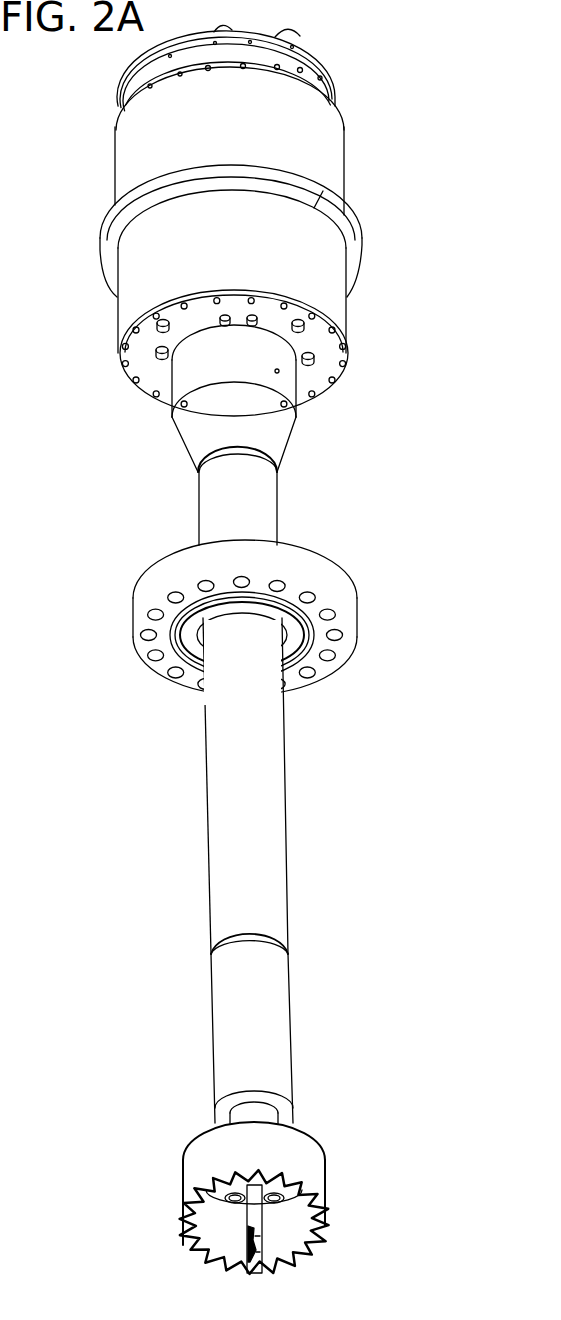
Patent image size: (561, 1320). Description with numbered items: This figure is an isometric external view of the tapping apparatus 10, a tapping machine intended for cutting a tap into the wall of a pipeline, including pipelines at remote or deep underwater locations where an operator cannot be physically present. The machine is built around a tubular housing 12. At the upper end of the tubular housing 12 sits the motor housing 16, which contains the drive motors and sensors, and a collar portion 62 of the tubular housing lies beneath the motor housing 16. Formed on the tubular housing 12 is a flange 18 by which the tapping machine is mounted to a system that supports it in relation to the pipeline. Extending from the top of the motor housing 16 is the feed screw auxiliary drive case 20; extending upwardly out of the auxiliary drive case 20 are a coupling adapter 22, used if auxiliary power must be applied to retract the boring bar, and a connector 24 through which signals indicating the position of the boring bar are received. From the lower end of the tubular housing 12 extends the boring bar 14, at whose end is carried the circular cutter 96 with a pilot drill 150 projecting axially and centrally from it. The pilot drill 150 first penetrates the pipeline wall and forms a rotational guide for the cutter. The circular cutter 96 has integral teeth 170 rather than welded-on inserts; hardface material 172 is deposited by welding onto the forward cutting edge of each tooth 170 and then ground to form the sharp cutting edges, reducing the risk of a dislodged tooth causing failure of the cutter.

The tapping apparatus 10 is at (337, 522).
The tubular housing 12 is at (237, 509).
The boring bar 14 is at (258, 1111).
The motor housing 16 is at (320, 298).
The flange 18 is at (338, 598).
The feed screw auxiliary drive case 20 is at (310, 79).
The coupling adapter 22 is at (297, 36).
The connector 24 is at (227, 27).
The collar portion 62 is at (285, 380).
The circular cutter 96 is at (259, 1209).
The pilot drill 150 is at (252, 1216).
The integral teeth 170 is at (208, 1188).
The hardface material 172 is at (318, 1270).